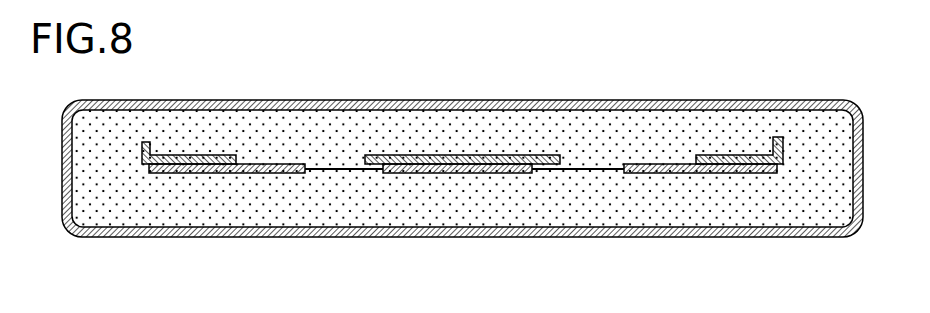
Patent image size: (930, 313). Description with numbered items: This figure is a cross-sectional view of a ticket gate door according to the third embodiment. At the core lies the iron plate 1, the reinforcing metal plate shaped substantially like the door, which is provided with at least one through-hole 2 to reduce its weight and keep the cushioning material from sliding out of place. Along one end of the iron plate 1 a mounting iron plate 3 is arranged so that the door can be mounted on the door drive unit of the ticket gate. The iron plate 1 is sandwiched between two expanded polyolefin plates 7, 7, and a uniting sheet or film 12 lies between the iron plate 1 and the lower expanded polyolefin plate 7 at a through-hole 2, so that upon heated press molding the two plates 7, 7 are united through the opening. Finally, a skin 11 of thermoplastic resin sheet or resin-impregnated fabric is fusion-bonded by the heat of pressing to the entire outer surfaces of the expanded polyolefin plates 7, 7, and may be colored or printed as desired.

The iron plate 1 is at (462, 162).
The through-hole 2 is at (336, 170).
The mounting iron plate 3 is at (201, 157).
The expanded polyolefin plate 7 is at (427, 120).
The skin 11 is at (271, 100).
The uniting sheet or film 12 is at (579, 167).